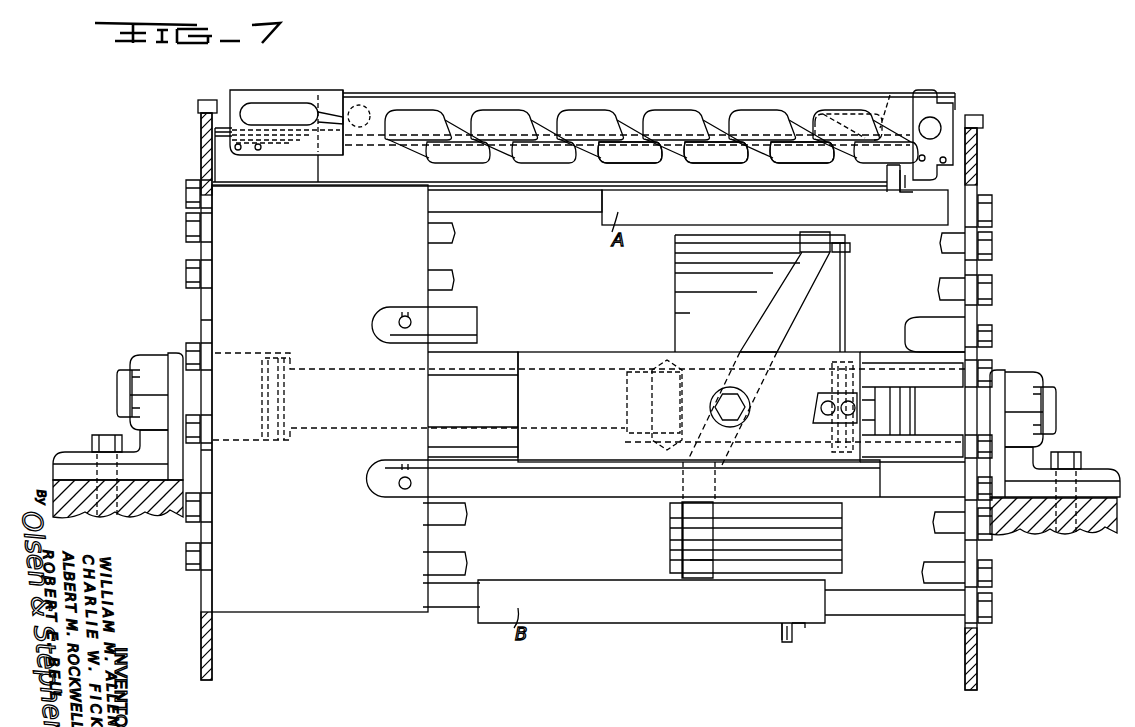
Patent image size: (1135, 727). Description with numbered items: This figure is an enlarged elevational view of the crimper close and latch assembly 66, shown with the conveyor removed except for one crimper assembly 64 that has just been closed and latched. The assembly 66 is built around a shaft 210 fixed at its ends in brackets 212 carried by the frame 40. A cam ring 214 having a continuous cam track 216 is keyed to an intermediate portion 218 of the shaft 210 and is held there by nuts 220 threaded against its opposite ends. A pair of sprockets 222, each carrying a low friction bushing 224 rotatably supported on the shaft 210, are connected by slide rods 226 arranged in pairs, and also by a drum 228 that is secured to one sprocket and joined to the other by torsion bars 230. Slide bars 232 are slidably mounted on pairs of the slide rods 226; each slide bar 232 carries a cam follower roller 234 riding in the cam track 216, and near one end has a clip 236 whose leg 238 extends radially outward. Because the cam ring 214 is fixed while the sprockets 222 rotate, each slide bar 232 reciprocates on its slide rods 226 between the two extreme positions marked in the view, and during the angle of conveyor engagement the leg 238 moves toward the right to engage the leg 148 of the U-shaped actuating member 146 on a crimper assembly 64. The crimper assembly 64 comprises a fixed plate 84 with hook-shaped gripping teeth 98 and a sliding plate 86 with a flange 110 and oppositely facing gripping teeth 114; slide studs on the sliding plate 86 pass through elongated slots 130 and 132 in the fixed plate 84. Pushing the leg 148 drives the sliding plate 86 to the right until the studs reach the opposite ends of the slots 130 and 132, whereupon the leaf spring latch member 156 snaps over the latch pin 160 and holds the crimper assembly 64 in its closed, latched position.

The frame 40 is at (1035, 520).
The crimper assembly 64 is at (598, 80).
The crimper close and latch assembly 66 is at (1001, 98).
The fixed plate 84 is at (235, 95).
The sliding plate 86 is at (700, 120).
The gripping teeth 98 is at (595, 157).
The flange 110 is at (775, 102).
The gripping teeth 114 is at (650, 162).
The elongated slot 130 is at (283, 108).
The elongated slot 132 is at (893, 100).
The actuating member 146 is at (941, 86).
The leg 148 is at (925, 178).
The latch member 156 is at (326, 94).
The latch pin 160 is at (370, 100).
The shaft 210 is at (982, 400).
The bracket 212 is at (1008, 400).
The cam ring 214 is at (840, 301).
The cam track 216 is at (805, 275).
The intermediate portion 218 is at (755, 385).
The nut 220 is at (658, 358).
The sprocket 222 is at (215, 318).
The bushing 224 is at (225, 352).
The slide rod 226 is at (518, 205).
The drum 228 is at (316, 612).
The torsion bar 230 is at (462, 312).
The slide bar 232 is at (618, 612).
The cam follower roller 234 is at (694, 572).
The clip 236 is at (804, 628).
The leg 238 is at (812, 415).